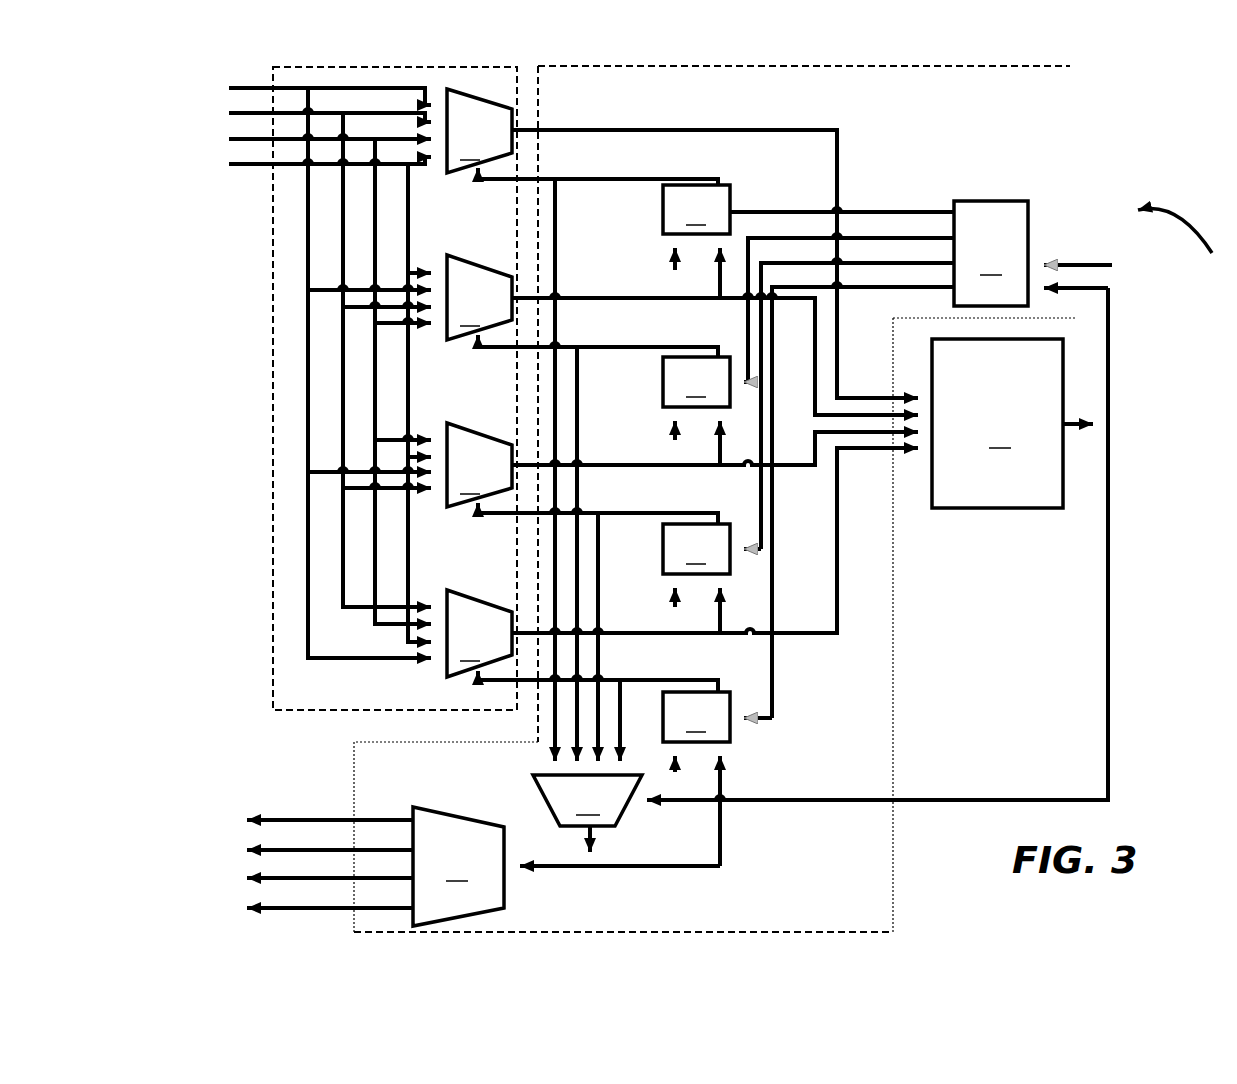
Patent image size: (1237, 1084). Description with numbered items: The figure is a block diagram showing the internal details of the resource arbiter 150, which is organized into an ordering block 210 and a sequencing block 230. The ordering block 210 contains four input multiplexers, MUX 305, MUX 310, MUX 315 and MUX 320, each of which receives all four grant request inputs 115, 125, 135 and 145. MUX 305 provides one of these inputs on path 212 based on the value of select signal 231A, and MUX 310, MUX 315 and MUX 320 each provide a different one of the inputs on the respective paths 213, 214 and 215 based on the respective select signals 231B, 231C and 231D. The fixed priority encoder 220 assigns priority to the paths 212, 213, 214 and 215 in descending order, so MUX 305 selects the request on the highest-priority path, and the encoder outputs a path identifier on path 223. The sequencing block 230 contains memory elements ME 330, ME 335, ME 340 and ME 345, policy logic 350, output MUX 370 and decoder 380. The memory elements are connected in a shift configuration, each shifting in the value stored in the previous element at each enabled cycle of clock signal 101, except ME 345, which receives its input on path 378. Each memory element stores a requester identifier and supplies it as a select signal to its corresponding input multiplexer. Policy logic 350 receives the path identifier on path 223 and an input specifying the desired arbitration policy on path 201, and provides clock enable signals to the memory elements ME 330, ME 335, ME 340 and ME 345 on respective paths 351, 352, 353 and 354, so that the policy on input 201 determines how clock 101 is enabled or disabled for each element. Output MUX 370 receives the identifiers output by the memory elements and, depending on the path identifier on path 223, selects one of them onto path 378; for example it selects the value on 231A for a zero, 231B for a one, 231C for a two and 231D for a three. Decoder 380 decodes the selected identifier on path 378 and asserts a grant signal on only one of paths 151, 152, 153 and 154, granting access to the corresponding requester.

The input 115 is at (244, 87).
The input 125 is at (244, 113).
The input 135 is at (244, 139).
The input 145 is at (244, 164).
The ordering block 210 is at (328, 702).
The sequencing block 230 is at (843, 925).
The MUX 305 is at (479, 131).
The MUX 310 is at (479, 297).
The MUX 315 is at (479, 465).
The MUX 320 is at (479, 633).
The path 212 is at (646, 130).
The path 213 is at (644, 298).
The path 214 is at (653, 465).
The path 215 is at (673, 633).
The select signal 231A is at (647, 179).
The select signal 231B is at (648, 346).
The select signal 231C is at (661, 513).
The select signal 231D is at (679, 680).
The memory element 330 is at (696, 241).
The memory element 335 is at (696, 411).
The memory element 340 is at (696, 578).
The memory element 345 is at (696, 779).
The clock signal 101 is at (672, 252).
The path 351 is at (920, 211).
The path 352 is at (920, 236).
The path 353 is at (920, 263).
The path 354 is at (920, 287).
The policy logic 350 is at (991, 253).
The input 201 is at (1075, 264).
The arbiter 150 is at (1187, 252).
The fixed priority encoder 220 is at (997, 423).
The path 223 is at (1110, 404).
The output MUX 370 is at (820, 570).
The path 378 is at (691, 865).
The decoder 380 is at (458, 866).
The path 151 is at (263, 819).
The path 152 is at (263, 849).
The path 153 is at (263, 877).
The path 154 is at (263, 907).